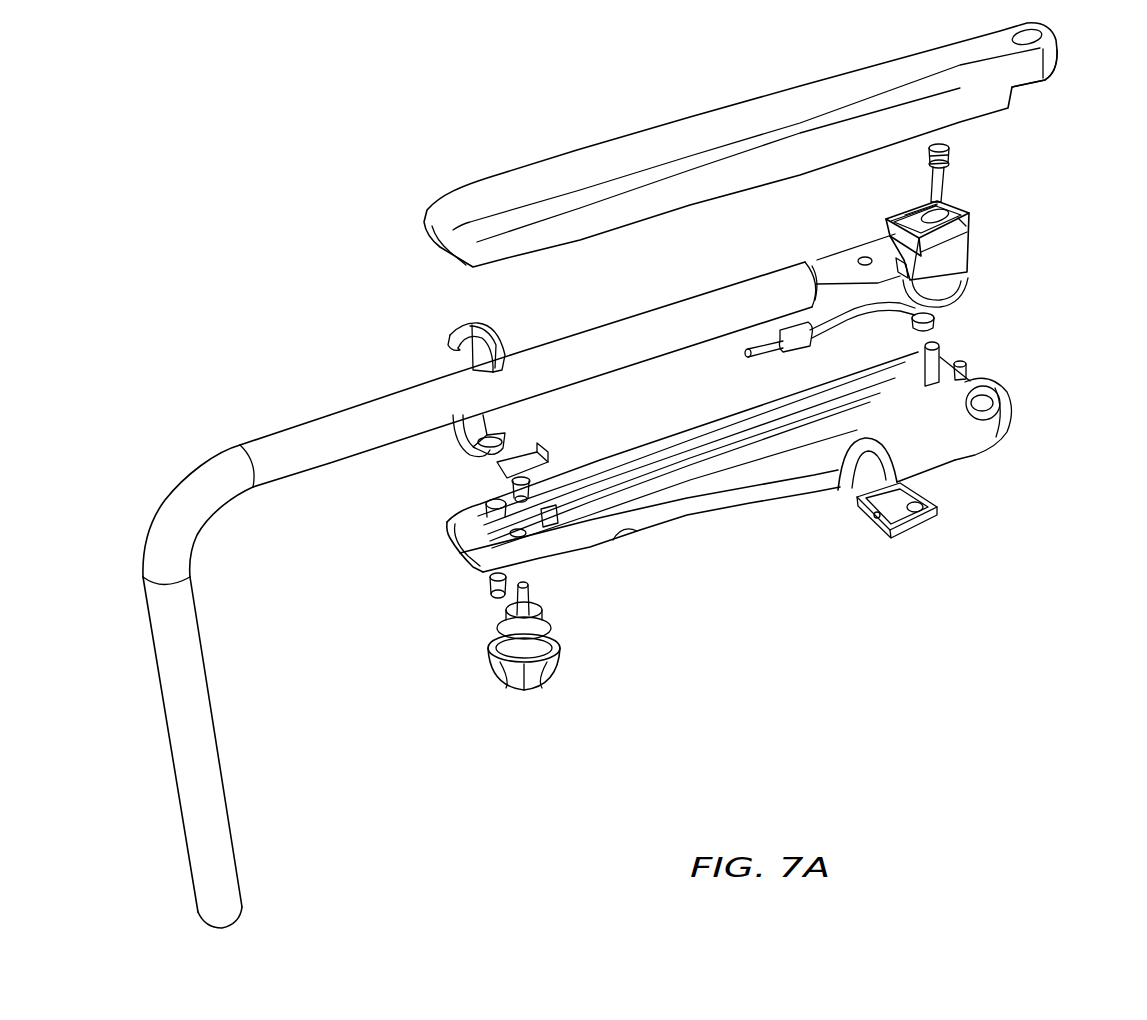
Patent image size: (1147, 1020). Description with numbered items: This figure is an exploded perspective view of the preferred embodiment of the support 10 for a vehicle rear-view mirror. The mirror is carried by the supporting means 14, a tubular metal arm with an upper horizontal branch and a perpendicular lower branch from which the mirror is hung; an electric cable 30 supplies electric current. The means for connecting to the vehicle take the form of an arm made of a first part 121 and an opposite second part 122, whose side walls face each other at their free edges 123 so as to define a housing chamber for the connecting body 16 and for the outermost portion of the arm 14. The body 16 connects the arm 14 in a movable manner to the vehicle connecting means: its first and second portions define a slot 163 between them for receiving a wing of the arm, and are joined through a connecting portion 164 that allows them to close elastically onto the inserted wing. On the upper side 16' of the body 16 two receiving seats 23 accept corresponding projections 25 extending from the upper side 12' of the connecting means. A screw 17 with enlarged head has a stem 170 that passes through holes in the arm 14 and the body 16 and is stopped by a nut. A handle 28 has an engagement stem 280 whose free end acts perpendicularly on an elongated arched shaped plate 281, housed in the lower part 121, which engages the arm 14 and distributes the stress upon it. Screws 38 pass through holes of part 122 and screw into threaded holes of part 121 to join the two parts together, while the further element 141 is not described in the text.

The support 10 is at (232, 228).
The means for supporting the rear-view mirror 14 is at (163, 466).
The electric cable 30 is at (445, 322).
The second part 122 is at (600, 120).
The free edges 123 is at (1005, 118).
The stem 170 is at (938, 146).
The screw 17 is at (968, 153).
The connecting means or body 16 is at (971, 240).
The upper side of the connecting body 16' is at (1021, 186).
The receiving seats 23 is at (909, 205).
The connecting portion 164 is at (968, 240).
The upper side of the connecting means 12' is at (858, 239).
The tube end 141 is at (826, 265).
The slot 163 is at (935, 316).
The first part 121 is at (820, 530).
The projections 25 is at (922, 388).
The shaped plate 281 is at (540, 462).
The screws 38 is at (489, 590).
The engagement stem 280 is at (532, 587).
The handle 28 is at (503, 700).